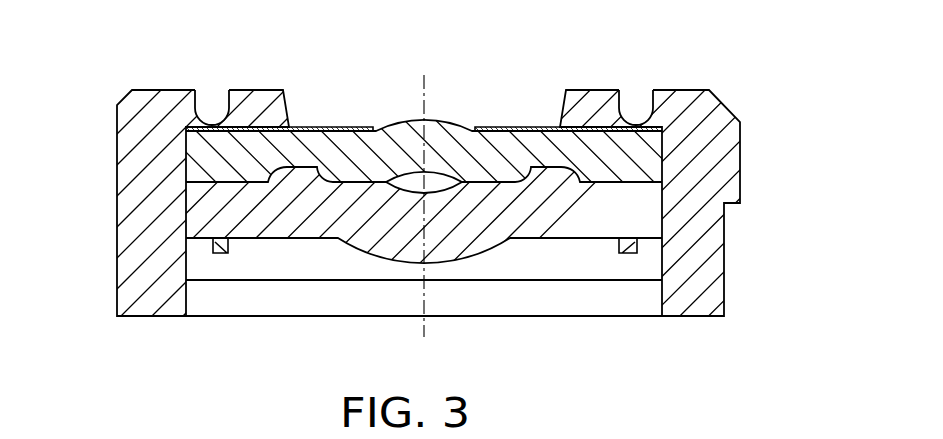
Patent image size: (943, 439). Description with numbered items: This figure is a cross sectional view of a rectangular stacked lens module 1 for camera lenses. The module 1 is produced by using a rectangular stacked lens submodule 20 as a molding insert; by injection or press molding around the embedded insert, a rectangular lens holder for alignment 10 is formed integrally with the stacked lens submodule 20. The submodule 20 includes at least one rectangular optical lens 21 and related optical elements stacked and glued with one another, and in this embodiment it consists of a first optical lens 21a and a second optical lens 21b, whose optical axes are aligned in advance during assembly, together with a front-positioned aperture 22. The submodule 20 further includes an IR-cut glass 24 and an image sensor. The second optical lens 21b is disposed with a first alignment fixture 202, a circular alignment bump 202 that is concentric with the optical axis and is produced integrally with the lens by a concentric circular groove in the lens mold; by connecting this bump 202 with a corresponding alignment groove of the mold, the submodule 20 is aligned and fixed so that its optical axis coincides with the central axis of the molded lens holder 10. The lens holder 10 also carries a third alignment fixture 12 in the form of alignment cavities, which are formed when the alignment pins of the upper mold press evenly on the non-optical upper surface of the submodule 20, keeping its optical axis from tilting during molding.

The rectangular stacked lens module 1 is at (741, 57).
The rectangular lens holder for alignment 10 is at (128, 152).
The third alignment fixture 12 is at (211, 99).
The rectangular stacked lens submodule 20 is at (520, 86).
The rectangular optical lens 21 is at (410, 136).
The first optical lens 21a is at (316, 143).
The second optical lens 21b is at (362, 207).
The aperture 22 is at (493, 128).
The IR-cut glass 24 is at (563, 297).
The first alignment fixture 202 is at (226, 254).